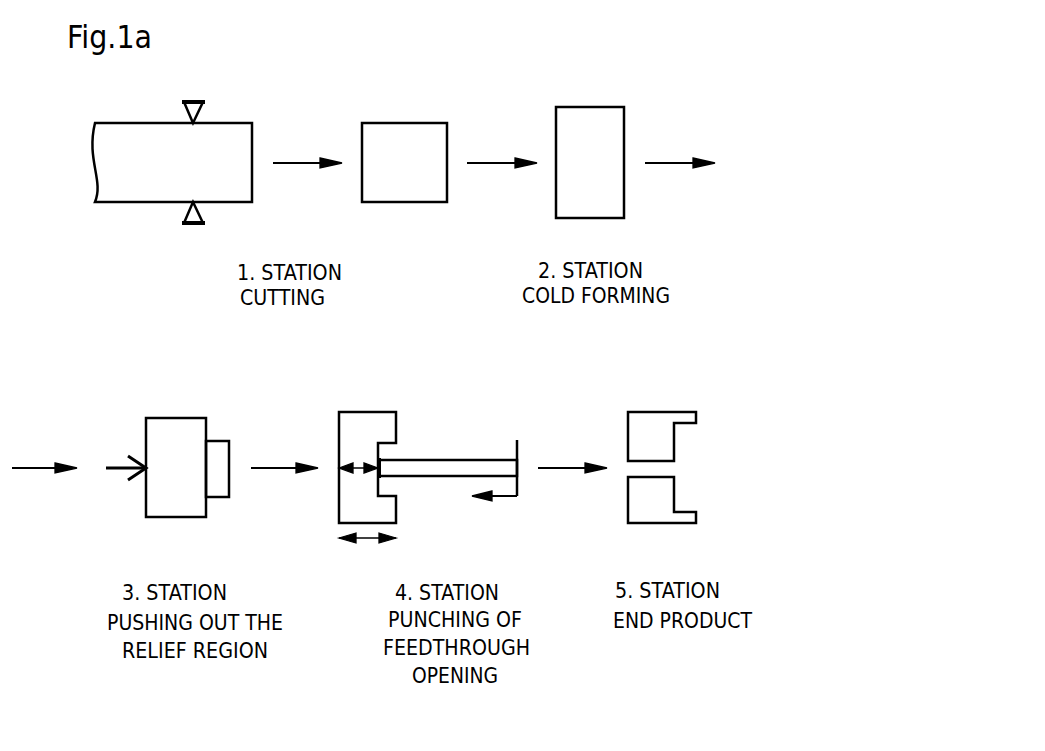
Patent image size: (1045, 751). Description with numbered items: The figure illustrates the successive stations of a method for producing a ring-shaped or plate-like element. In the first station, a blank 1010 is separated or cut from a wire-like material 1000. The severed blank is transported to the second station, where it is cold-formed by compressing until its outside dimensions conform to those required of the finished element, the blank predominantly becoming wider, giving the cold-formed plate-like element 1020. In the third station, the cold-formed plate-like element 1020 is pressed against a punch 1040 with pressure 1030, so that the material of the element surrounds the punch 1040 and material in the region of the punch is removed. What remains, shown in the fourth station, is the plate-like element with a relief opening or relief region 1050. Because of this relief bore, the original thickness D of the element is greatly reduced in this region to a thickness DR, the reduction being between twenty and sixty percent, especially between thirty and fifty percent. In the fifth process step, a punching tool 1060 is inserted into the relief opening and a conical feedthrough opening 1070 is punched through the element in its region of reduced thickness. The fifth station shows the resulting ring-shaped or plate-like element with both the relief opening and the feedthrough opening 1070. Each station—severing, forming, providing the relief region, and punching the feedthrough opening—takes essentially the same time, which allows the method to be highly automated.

The wire-like material 1000 is at (129, 183).
The blank 1010 is at (407, 185).
The cold-formed plate-like element 1020 is at (598, 122).
The pressure 1030 is at (118, 471).
The punch 1040 is at (220, 448).
The relief region 1050 is at (380, 480).
The punching tool 1060 is at (460, 468).
The feedthrough opening 1070 is at (638, 467).
The reduced thickness DR is at (359, 465).
The thickness D is at (363, 540).